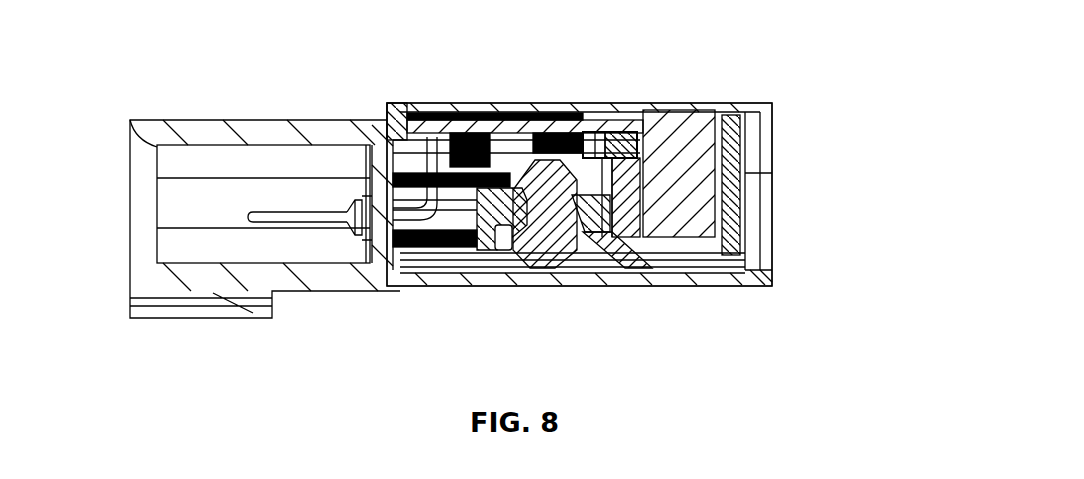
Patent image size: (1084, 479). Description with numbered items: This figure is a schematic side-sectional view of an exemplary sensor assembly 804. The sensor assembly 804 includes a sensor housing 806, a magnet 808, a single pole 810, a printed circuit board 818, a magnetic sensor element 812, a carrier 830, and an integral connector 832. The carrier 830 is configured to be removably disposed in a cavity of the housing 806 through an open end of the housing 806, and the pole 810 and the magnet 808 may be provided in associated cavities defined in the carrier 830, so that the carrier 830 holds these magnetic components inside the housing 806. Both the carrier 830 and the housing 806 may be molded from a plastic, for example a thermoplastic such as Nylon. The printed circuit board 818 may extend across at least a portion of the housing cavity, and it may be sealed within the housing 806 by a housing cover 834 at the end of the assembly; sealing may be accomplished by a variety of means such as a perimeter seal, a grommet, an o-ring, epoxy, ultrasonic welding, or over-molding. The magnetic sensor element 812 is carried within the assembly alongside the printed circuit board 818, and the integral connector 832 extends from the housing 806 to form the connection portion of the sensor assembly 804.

The sensor assembly 804 is at (822, 153).
The sensor housing 806 is at (391, 90).
The magnet 808 is at (688, 205).
The single pole 810 is at (556, 262).
The magnetic sensor element 812 is at (548, 120).
The printed circuit board 818 is at (607, 118).
The carrier 830 is at (627, 240).
The integral connector 832 is at (206, 284).
The housing cover 834 is at (772, 190).